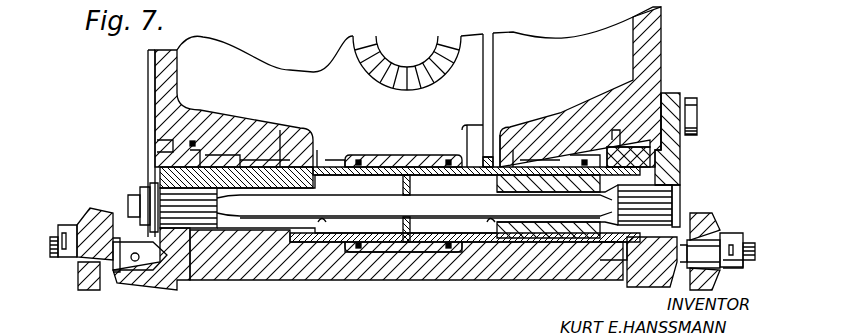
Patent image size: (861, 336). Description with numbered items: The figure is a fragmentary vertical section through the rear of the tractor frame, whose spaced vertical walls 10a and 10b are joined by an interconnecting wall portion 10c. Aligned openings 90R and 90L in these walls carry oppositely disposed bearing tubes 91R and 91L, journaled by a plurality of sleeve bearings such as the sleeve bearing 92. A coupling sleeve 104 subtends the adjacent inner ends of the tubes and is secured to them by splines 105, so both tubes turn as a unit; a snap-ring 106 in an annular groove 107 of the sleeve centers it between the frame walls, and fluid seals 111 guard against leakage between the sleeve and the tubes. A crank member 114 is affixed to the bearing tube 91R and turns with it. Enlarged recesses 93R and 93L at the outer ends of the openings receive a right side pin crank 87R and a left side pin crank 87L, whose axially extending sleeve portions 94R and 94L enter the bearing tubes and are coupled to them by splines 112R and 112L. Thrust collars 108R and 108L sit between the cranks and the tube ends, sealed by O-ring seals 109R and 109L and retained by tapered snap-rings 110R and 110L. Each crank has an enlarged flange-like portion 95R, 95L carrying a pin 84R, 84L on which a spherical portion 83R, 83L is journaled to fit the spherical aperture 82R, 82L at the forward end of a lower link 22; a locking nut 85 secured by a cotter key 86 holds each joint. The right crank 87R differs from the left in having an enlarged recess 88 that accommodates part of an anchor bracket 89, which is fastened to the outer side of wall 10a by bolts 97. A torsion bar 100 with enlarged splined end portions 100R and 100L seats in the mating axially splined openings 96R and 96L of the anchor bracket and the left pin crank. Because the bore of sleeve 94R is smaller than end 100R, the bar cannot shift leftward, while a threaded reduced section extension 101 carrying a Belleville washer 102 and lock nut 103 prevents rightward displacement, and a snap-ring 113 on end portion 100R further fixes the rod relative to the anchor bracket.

The vertical wall 10a is at (637, 33).
The vertical wall 10b is at (172, 58).
The interconnecting wall portion 10c is at (338, 270).
The lower link 22 is at (713, 221).
The spherical aperture 82L is at (88, 270).
The spherical aperture 82R is at (713, 238).
The spherical portion 83L is at (128, 272).
The spherical portion 83R is at (722, 277).
The pin 84L is at (150, 267).
The pin 84R is at (744, 265).
The locking nut 85 is at (64, 228).
The cotter key 86 is at (55, 259).
The left side pin crank 87L is at (158, 158).
The right side pin crank 87R is at (652, 163).
The enlarged recess 88 is at (650, 173).
The anchor bracket 89 is at (670, 93).
The aligned opening 90L is at (310, 126).
The aligned opening 90R is at (518, 157).
The bearing tube 91L is at (338, 165).
The bearing tube 91R is at (468, 160).
The sleeve bearing 92 is at (318, 150).
The enlarged recess 93L is at (197, 167).
The enlarged recess 93R is at (630, 146).
The sleeve portion 94L is at (270, 244).
The sleeve portion 94R is at (530, 244).
The flange-like portion 95L is at (176, 292).
The flange-like portion 95R is at (628, 278).
The axially splined opening 96L is at (160, 168).
The axially splined opening 96R is at (682, 193).
The bolt 97 is at (694, 120).
The torsion bar 100 is at (448, 213).
The splined end portion 100L is at (192, 212).
The splined end portion 100R is at (680, 210).
The threaded reduced section extension 101 is at (150, 185).
The Belleville washer 102 is at (147, 230).
The lock nut 103 is at (135, 195).
The coupling sleeve 104 is at (385, 165).
The splines 105 is at (422, 148).
The snap-ring 106 is at (402, 250).
The annular groove 107 is at (407, 244).
The thrust collar 108L is at (220, 158).
The thrust collar 108R is at (603, 165).
The O-ring seal 109L is at (245, 165).
The O-ring seal 109R is at (546, 165).
The tapered snap-ring 110L is at (194, 143).
The tapered snap-ring 110R is at (584, 160).
The fluid seal 111 is at (359, 160).
The splines 112L is at (320, 228).
The splines 112R is at (490, 240).
The snap-ring 113 is at (677, 190).
The crank member 114 is at (494, 66).